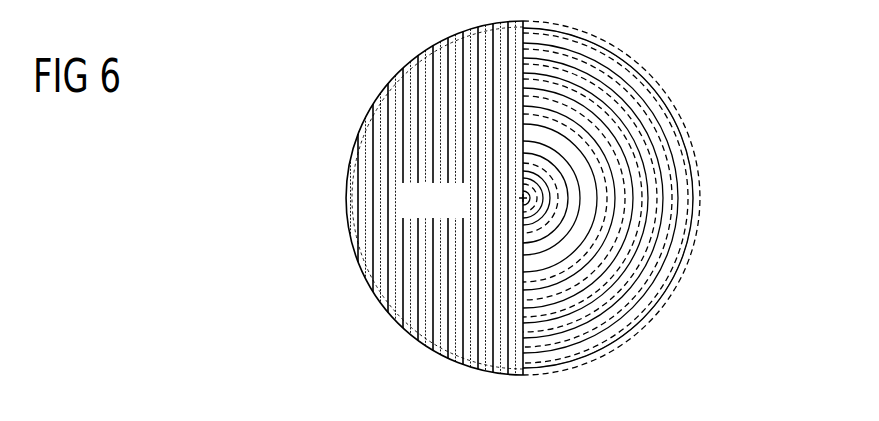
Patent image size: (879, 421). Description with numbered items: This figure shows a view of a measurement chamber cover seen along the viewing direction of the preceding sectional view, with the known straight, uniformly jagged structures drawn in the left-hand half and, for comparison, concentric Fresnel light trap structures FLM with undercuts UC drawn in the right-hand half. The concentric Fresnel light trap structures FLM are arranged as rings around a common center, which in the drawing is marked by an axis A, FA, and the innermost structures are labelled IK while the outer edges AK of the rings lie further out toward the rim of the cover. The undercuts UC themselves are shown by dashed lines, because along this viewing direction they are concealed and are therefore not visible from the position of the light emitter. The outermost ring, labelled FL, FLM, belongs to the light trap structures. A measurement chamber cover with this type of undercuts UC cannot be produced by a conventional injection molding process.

The inner core IK is at (353, 163).
The outer edges AK is at (348, 209).
The axis A is at (463, 201).
The fiber axis FA is at (519, 198).
The fiber layer FL is at (577, 198).
The concentric Fresnel light trap structures with undercuts FLM is at (687, 90).
The undercuts UC is at (698, 176).